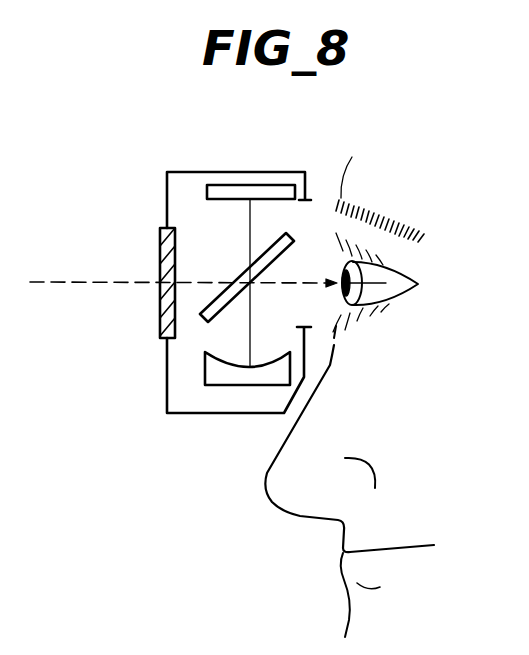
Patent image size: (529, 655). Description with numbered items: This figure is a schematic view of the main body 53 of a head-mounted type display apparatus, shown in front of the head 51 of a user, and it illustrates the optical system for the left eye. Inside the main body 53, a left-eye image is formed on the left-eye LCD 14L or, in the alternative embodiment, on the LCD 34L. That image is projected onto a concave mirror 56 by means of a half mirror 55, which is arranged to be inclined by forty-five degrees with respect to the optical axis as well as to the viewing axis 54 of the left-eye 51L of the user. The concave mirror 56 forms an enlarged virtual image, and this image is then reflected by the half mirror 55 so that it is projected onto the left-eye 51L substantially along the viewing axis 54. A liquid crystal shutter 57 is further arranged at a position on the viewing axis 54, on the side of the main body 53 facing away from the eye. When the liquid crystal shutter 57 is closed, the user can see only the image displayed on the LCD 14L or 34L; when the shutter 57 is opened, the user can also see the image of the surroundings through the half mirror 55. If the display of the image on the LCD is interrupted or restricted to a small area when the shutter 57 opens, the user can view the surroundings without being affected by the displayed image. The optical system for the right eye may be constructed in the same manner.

The main body 53 is at (233, 171).
The left-eye LCD 14L is at (320, 234).
The left-eye LCD 34L is at (283, 192).
The half mirror 55 is at (242, 272).
The concave mirror 56 is at (238, 373).
The liquid crystal shutter 57 is at (158, 308).
The viewing axis 54 is at (86, 281).
The left-eye 51L is at (395, 279).
The head 51 is at (329, 549).